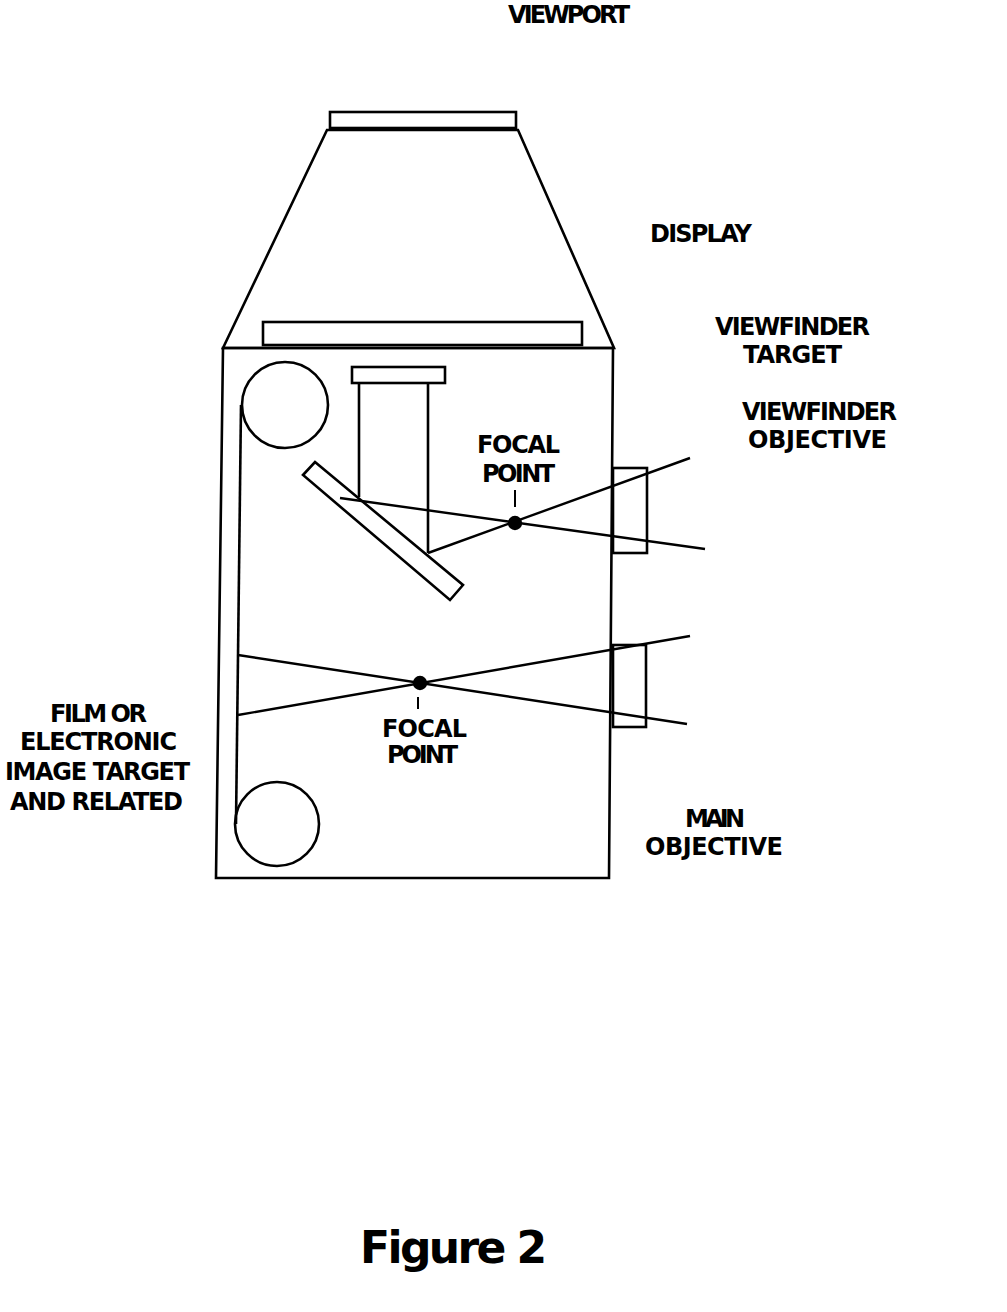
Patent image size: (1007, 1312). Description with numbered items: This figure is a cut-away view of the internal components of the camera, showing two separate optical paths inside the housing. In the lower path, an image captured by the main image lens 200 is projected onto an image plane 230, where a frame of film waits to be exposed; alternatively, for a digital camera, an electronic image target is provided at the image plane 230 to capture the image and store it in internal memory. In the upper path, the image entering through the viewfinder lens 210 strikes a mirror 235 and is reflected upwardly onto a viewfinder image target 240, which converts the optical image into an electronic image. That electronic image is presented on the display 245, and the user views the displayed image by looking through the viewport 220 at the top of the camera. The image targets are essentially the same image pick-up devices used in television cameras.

The main image lens 200 is at (662, 723).
The viewfinder lens 210 is at (666, 477).
The viewport 220 is at (423, 67).
The image plane 230 is at (226, 614).
The mirror 235 is at (305, 531).
The viewfinder image target 240 is at (527, 444).
The display 245 is at (445, 283).